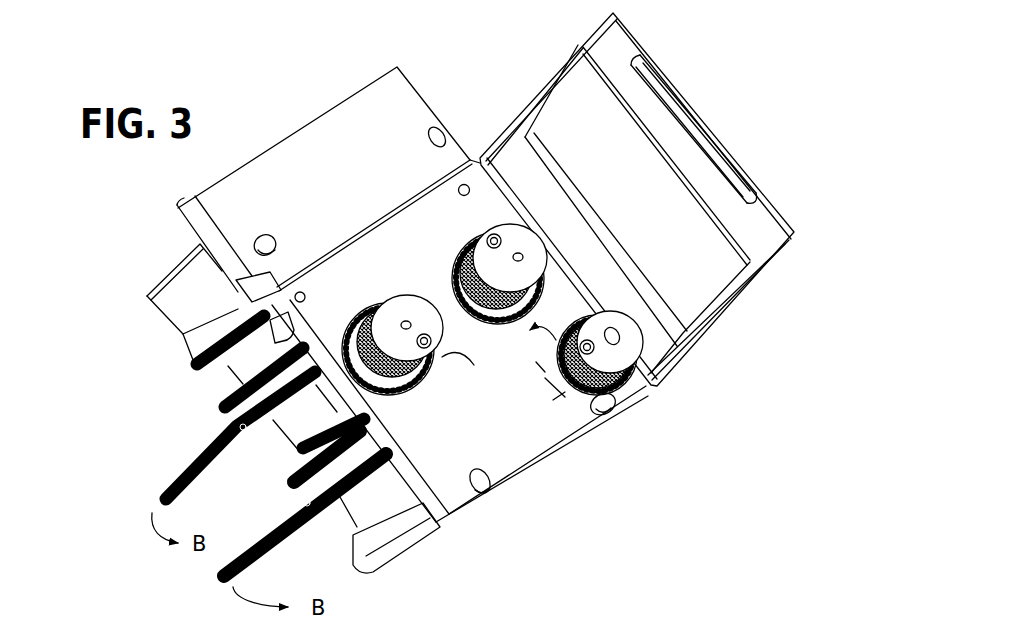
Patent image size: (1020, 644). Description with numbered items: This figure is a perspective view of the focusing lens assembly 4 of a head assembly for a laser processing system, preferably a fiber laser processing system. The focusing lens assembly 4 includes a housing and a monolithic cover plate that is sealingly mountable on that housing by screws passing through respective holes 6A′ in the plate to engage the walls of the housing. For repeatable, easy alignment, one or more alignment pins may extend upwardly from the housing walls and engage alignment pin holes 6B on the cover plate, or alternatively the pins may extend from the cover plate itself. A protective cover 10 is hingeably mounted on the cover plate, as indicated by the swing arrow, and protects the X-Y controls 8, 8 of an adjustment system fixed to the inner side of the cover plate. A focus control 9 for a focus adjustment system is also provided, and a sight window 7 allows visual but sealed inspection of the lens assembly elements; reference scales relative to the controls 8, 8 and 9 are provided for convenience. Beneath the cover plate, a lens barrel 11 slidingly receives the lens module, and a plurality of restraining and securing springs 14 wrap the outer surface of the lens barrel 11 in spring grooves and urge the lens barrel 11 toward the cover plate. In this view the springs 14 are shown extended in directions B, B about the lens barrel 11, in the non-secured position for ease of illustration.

The focusing lens assembly 4 is at (257, 141).
The holes 6A′ is at (431, 116).
The alignment pin holes 6B is at (285, 301).
The sight window 7 is at (474, 365).
The X-Y controls 8 is at (389, 316).
The focus control 9 is at (616, 358).
The protective cover 10 is at (723, 326).
The lens barrel 11 is at (136, 290).
The restraining and securing springs 14 is at (268, 478).